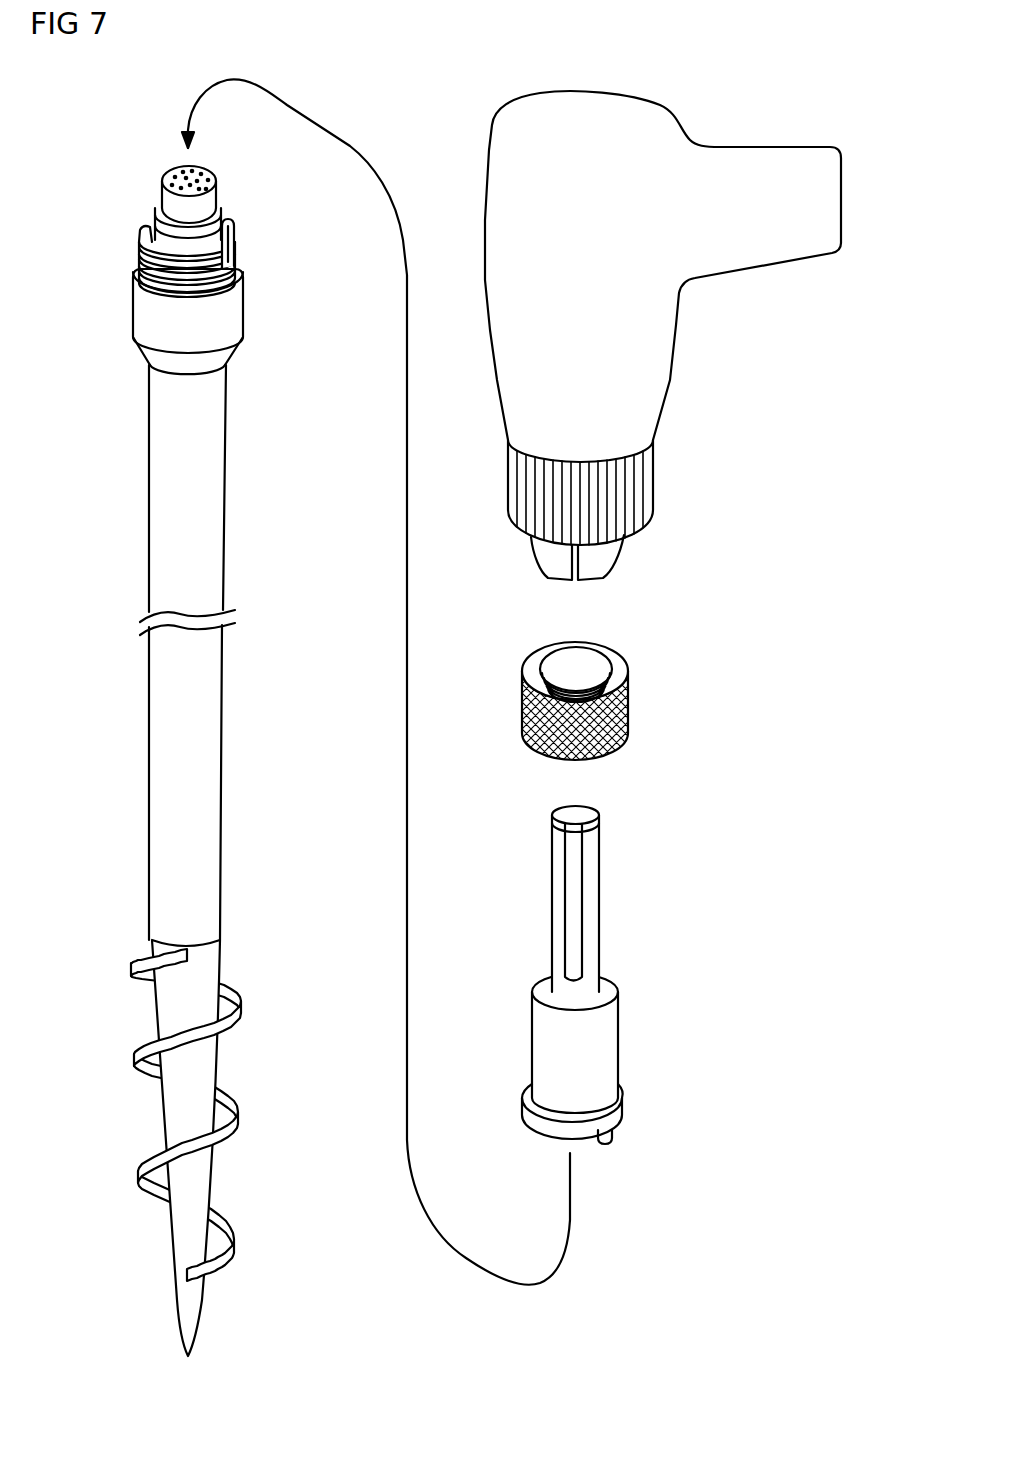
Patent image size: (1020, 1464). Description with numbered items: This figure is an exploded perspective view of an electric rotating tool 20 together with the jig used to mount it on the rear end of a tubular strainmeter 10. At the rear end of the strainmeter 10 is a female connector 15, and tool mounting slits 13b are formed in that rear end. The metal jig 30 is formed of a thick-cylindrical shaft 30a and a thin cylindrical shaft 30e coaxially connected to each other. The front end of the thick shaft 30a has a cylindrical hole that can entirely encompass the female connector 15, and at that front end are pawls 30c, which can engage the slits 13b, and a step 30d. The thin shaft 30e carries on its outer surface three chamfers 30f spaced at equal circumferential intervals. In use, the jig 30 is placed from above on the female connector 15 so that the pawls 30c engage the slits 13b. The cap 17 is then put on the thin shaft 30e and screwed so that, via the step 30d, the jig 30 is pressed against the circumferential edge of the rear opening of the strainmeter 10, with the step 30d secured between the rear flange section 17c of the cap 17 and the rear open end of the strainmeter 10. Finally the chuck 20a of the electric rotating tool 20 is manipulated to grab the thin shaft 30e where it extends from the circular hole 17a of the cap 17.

The tubular strainmeter 10 is at (138, 497).
The female connector 15 is at (172, 168).
The slits 13b is at (237, 256).
The electric rotating tool 20 is at (665, 392).
The chuck 20a is at (622, 552).
The cap 17 is at (628, 712).
The circular hole 17a is at (553, 663).
The rear flange section 17c is at (618, 658).
The jig 30 is at (634, 997).
The thin cylindrical shaft 30e is at (599, 858).
The chamfers 30f is at (576, 920).
The thick-cylindrical shaft 30a is at (600, 1048).
The step 30d is at (617, 1112).
The pawls 30c is at (612, 1142).